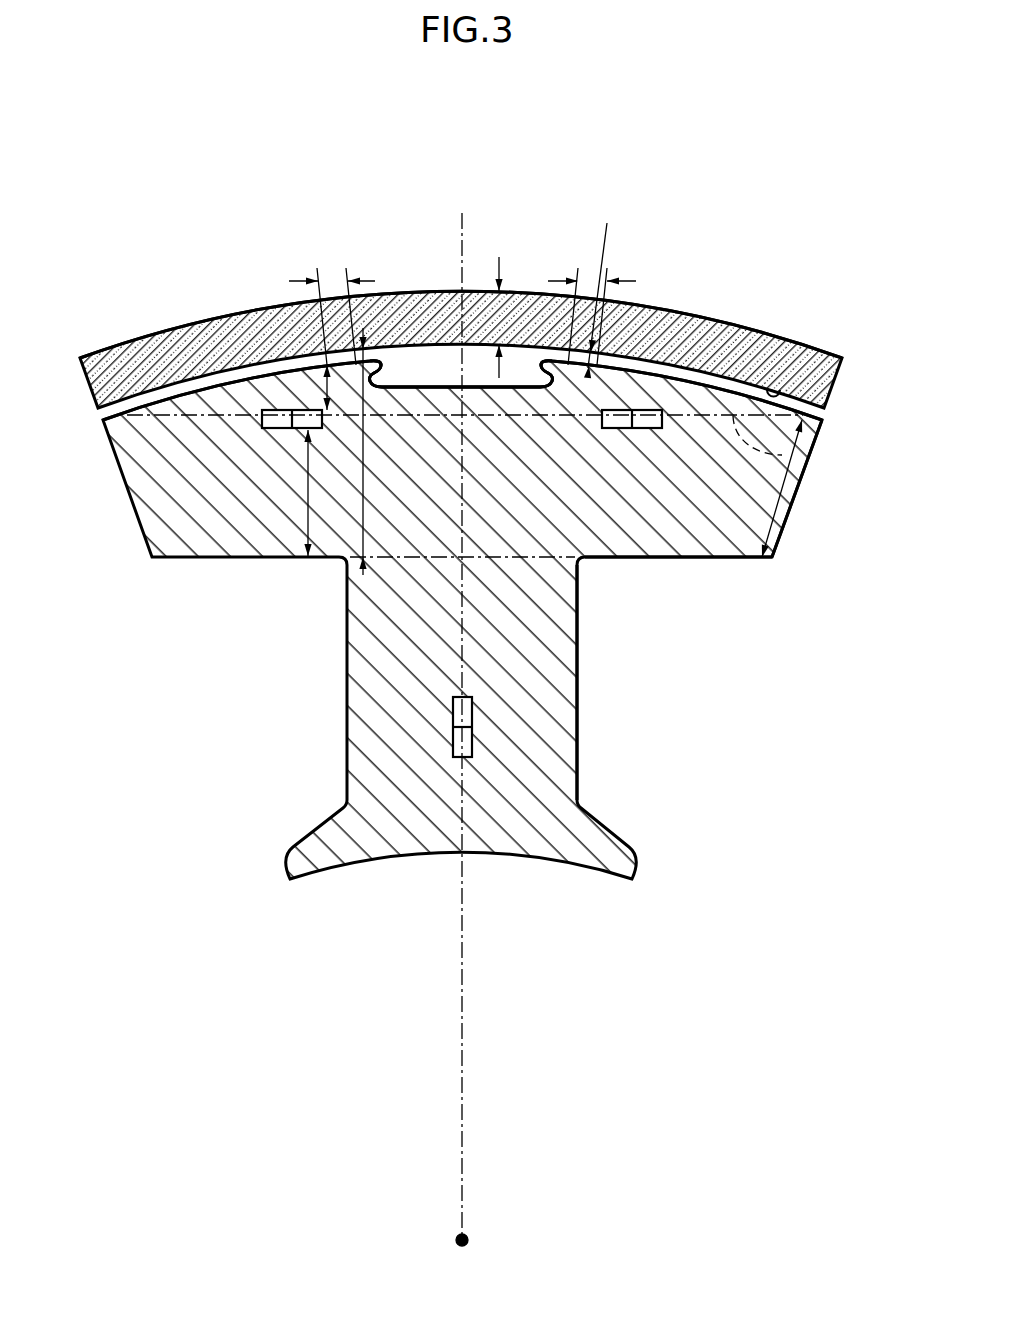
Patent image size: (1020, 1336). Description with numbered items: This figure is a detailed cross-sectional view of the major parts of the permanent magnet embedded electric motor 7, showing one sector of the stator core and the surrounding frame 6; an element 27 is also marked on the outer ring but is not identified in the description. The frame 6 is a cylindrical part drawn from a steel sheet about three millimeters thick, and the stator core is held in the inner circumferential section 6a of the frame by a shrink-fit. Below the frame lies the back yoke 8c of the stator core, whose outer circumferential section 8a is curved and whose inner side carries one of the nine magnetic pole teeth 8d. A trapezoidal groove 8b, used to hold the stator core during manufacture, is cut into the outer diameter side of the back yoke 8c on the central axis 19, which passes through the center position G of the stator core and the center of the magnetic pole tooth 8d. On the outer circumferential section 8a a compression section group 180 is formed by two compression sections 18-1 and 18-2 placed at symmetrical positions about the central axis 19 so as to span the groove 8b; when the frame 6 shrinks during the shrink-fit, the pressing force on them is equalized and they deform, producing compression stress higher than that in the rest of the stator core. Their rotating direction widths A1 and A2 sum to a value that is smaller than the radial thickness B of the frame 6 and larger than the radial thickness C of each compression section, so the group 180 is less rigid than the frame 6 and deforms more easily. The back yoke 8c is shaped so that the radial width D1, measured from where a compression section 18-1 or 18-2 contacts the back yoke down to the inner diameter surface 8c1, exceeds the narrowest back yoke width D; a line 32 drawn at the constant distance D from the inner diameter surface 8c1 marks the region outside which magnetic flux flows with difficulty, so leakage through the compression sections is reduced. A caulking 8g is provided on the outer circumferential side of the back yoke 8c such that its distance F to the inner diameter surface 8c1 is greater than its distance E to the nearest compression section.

The rotor 7 is at (628, 207).
The magnet ring 27 is at (185, 388).
The frame 6 is at (702, 334).
The inner circumferential section of the frame 6a is at (778, 387).
The caulking 8g is at (277, 410).
The outer circumferential section of the stator core 8a is at (662, 380).
The grooves 8b is at (422, 365).
The back yoke 8c is at (787, 508).
The inner diameter surface of the back yoke 8c1 is at (620, 558).
The magnetic pole teeth 8d is at (553, 725).
The line 32 is at (782, 455).
The central axis 19 is at (462, 985).
The center position G is at (468, 1240).
The compression section group 180 is at (498, 162).
The compression section 18-1 is at (336, 362).
The compression section 18-2 is at (580, 362).
The rotating direction width A1 is at (337, 307).
The rotating direction width A2 is at (594, 309).
The radial direction thickness of the frame B is at (490, 310).
The radial direction thickness of the compression section C is at (607, 223).
The narrowest width of the back yoke D is at (782, 488).
The radial direction width D1 is at (379, 462).
The distance E is at (314, 387).
The distance F is at (298, 493).